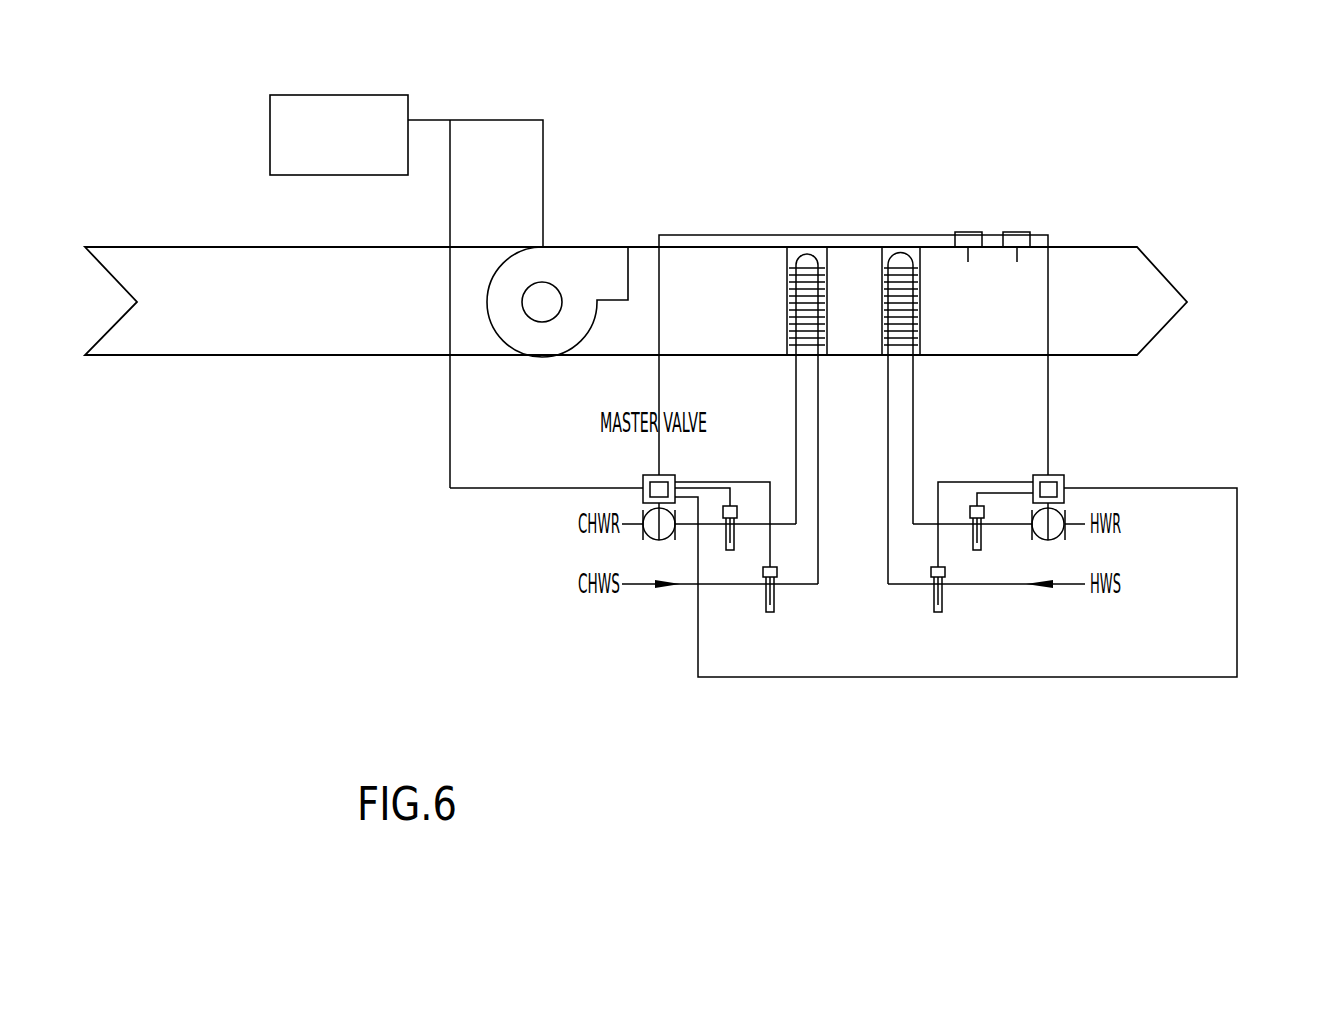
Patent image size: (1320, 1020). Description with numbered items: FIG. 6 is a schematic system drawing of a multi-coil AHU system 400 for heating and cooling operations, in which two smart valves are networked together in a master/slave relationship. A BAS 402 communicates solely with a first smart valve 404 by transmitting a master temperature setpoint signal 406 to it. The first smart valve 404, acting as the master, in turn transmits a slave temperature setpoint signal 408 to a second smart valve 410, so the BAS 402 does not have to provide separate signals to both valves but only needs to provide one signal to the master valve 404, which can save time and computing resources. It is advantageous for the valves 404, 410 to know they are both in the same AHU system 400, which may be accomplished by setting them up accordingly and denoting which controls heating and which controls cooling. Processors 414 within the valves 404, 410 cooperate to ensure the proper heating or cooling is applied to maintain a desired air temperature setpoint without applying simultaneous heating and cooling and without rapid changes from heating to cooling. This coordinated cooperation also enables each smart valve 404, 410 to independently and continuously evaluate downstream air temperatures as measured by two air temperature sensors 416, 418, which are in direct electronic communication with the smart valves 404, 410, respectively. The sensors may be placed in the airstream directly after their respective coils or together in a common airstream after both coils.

The multi-coil AHU system 400 is at (1158, 100).
The BAS 402 is at (268, 137).
The first smart valve 404 is at (598, 497).
The master temperature setpoint signal 406 is at (450, 448).
The slave temperature setpoint signal 408 is at (1237, 565).
The second smart valve 410 is at (1104, 468).
The processors 414 is at (668, 475).
The air temperature sensor 416 is at (966, 232).
The air temperature sensor 418 is at (1018, 232).